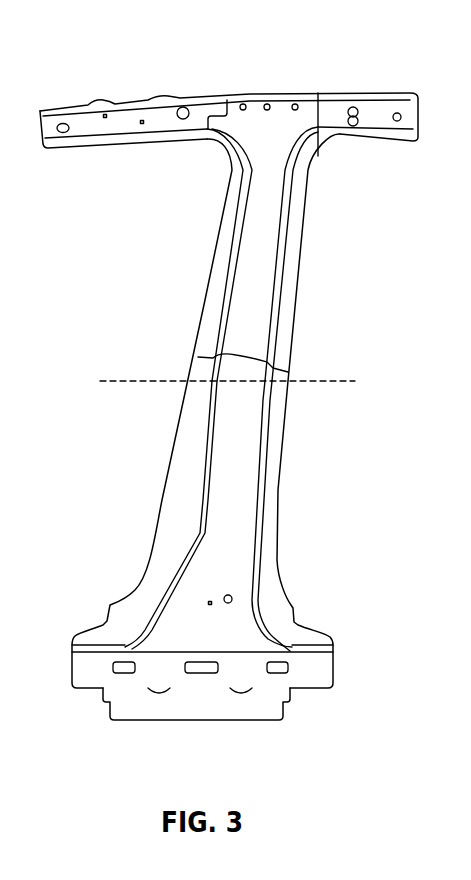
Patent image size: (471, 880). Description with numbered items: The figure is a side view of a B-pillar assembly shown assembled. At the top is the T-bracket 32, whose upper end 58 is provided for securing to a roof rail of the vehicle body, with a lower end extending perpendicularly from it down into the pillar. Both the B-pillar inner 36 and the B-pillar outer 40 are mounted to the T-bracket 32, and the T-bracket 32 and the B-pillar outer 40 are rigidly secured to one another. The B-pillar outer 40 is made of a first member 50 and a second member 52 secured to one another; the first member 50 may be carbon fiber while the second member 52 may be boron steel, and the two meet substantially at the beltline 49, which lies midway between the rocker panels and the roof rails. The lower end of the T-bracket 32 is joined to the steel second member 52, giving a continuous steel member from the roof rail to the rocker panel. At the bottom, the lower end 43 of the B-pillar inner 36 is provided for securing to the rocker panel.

The T-bracket 32 is at (392, 93).
The B-pillar inner 36 is at (208, 723).
The B-pillar outer 40 is at (280, 574).
The lower end 43 is at (267, 722).
The beltline 49 is at (333, 380).
The first member 50 is at (218, 237).
The second member 52 is at (173, 462).
The upper end 58 is at (127, 102).